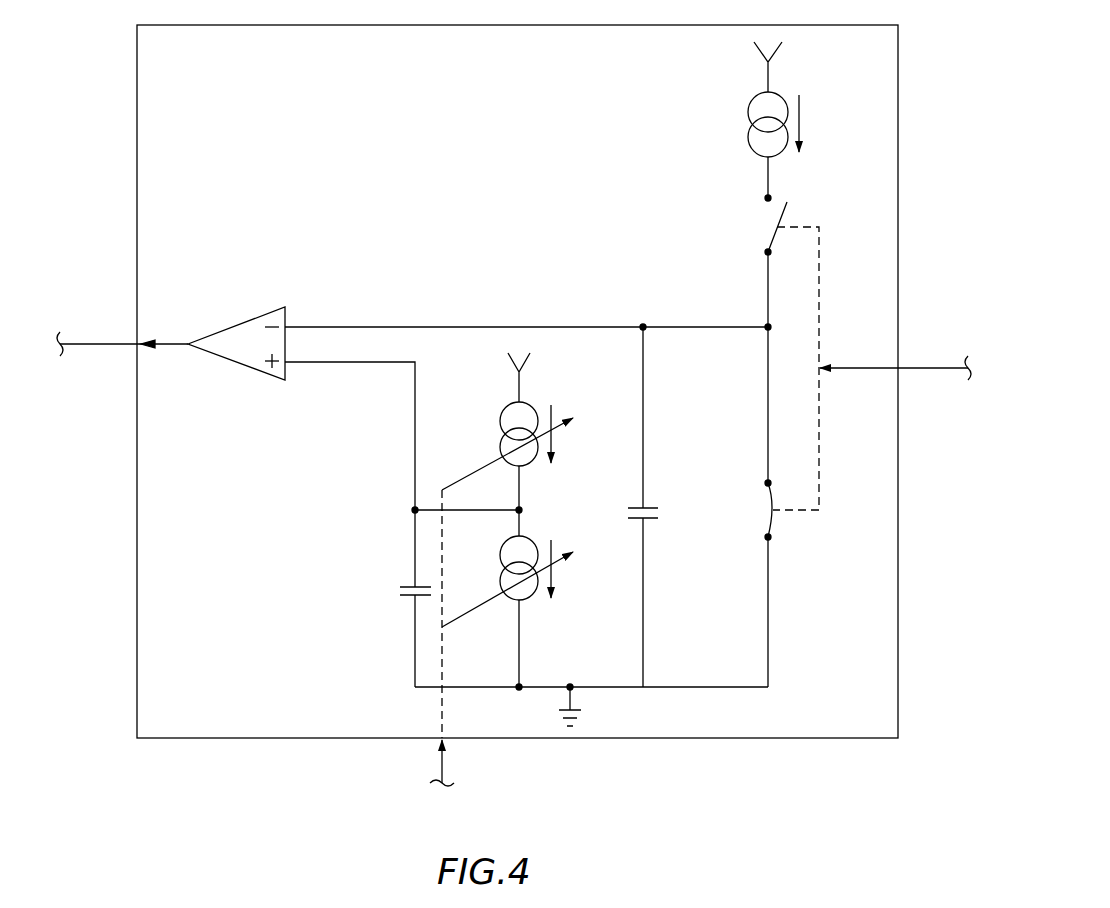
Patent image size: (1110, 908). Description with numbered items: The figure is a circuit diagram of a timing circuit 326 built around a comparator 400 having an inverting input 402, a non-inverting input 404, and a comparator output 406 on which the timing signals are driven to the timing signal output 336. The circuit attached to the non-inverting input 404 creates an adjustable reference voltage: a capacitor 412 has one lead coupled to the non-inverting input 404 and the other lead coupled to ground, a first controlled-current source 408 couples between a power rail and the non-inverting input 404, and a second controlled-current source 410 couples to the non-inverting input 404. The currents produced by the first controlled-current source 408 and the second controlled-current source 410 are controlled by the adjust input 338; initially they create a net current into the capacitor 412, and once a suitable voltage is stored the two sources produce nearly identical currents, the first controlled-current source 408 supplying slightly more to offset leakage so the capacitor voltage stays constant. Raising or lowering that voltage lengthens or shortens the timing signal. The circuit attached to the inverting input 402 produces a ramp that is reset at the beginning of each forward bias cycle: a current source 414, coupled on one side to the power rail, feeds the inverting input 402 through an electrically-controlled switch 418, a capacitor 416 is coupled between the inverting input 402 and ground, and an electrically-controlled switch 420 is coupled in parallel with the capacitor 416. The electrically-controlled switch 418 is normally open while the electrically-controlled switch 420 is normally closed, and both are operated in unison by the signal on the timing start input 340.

The timing circuit 326 is at (276, 103).
The timing signal output 336 is at (137, 344).
The adjust input 338 is at (444, 740).
The timing start input 340 is at (898, 368).
The comparator 400 is at (208, 366).
The inverting input 402 is at (287, 326).
The non-inverting input 404 is at (285, 368).
The comparator output 406 is at (188, 343).
The first controlled-current source 408 is at (546, 398).
The second controlled-current source 410 is at (536, 524).
The capacitor 412 is at (396, 588).
The current source 414 is at (736, 100).
The capacitor 416 is at (655, 500).
The electrically-controlled switch 418 is at (752, 232).
The electrically-controlled switch 420 is at (783, 520).